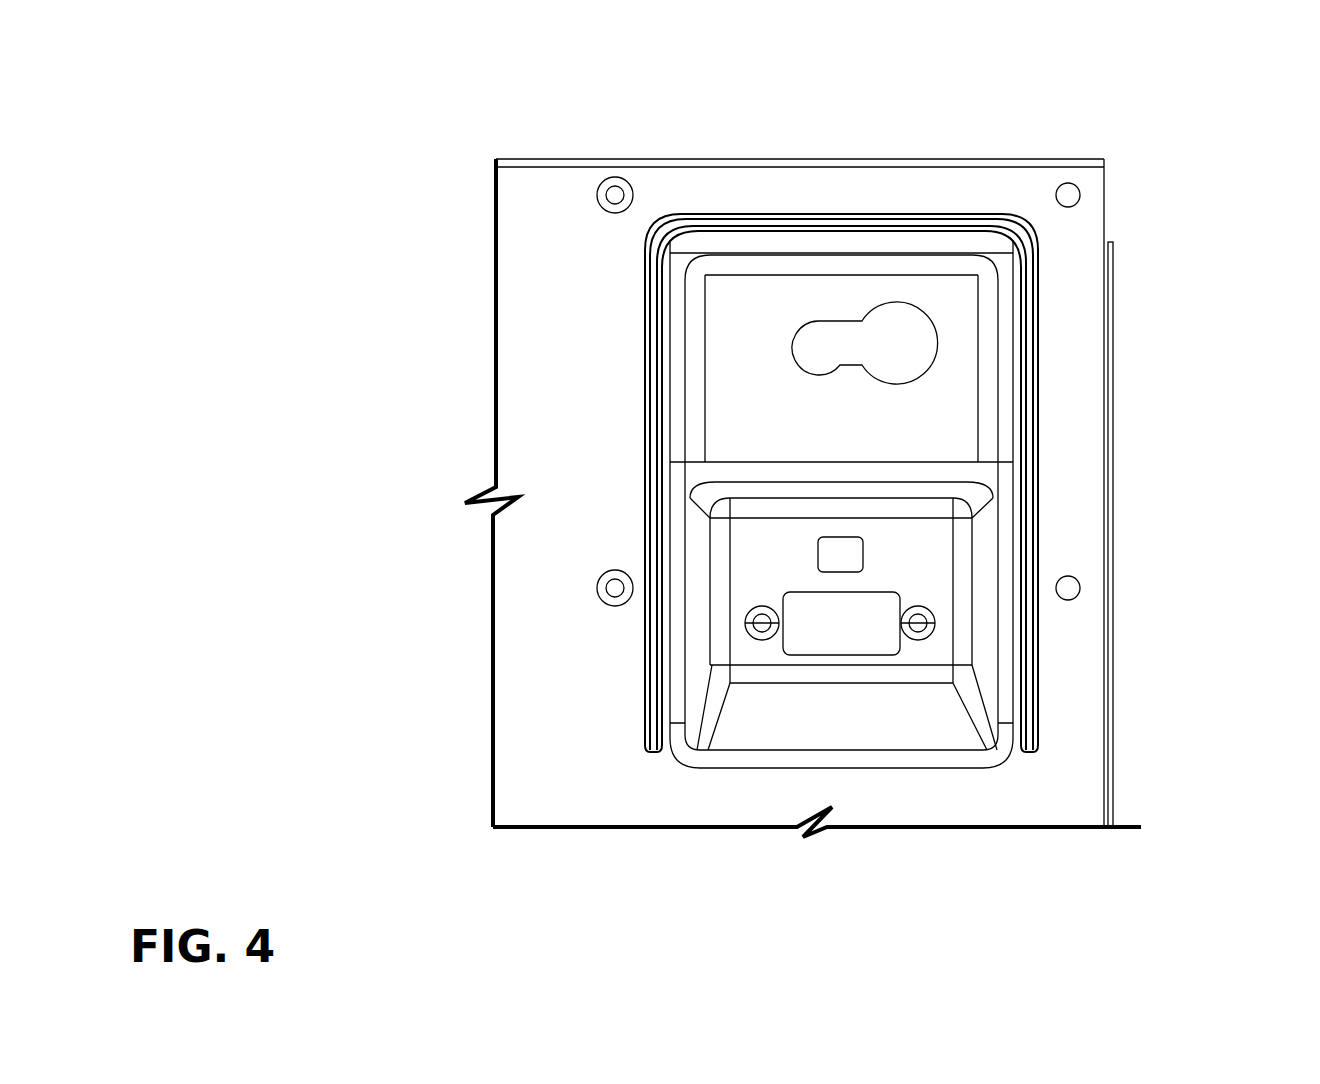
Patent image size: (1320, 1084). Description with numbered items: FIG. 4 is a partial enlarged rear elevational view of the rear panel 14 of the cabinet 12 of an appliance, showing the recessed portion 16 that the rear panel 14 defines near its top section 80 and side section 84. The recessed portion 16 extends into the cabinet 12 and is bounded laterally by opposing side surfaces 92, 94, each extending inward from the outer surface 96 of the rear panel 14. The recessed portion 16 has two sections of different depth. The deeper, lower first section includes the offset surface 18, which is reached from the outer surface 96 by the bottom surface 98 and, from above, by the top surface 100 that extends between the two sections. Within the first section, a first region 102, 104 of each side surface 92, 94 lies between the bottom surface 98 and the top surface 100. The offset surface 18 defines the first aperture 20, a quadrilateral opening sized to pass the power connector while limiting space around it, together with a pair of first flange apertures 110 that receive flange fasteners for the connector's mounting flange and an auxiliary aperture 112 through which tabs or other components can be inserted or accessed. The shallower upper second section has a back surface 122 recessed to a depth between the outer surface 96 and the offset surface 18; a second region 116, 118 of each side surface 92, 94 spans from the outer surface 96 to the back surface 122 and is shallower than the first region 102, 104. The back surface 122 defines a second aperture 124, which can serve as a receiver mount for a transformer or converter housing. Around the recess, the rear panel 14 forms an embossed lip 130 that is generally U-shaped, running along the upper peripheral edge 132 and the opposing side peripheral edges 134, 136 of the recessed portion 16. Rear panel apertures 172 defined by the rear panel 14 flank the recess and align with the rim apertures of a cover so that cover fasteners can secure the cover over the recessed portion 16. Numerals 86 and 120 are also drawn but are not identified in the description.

The cabinet 12 is at (528, 172).
The rear panel 14 is at (545, 241).
The recessed portion 16 is at (975, 718).
The offset surface 18 is at (930, 547).
The first aperture 20 is at (888, 598).
The top section 80 is at (843, 160).
The side section 84 is at (1108, 290).
The housing bottom 86 is at (672, 776).
The opposing side surface 92 is at (672, 480).
The opposing side surface 94 is at (1035, 378).
The outer surface 96 is at (1075, 325).
The bottom surface 98 is at (812, 742).
The top surface 100 is at (905, 495).
The first region 102 is at (693, 620).
The first region 104 is at (980, 628).
The first flange apertures 110 is at (755, 630).
The auxiliary aperture 112 is at (835, 535).
The second region 116 is at (675, 330).
The second region 118 is at (1022, 380).
The upper compartment 120 is at (930, 298).
The back surface 122 is at (955, 338).
The second aperture 124 is at (817, 320).
The lip 130 is at (676, 216).
The upper peripheral edge 132 is at (877, 232).
The side peripheral edge 134 is at (655, 518).
The side peripheral edge 136 is at (1012, 503).
The rear panel apertures 172 is at (612, 192).